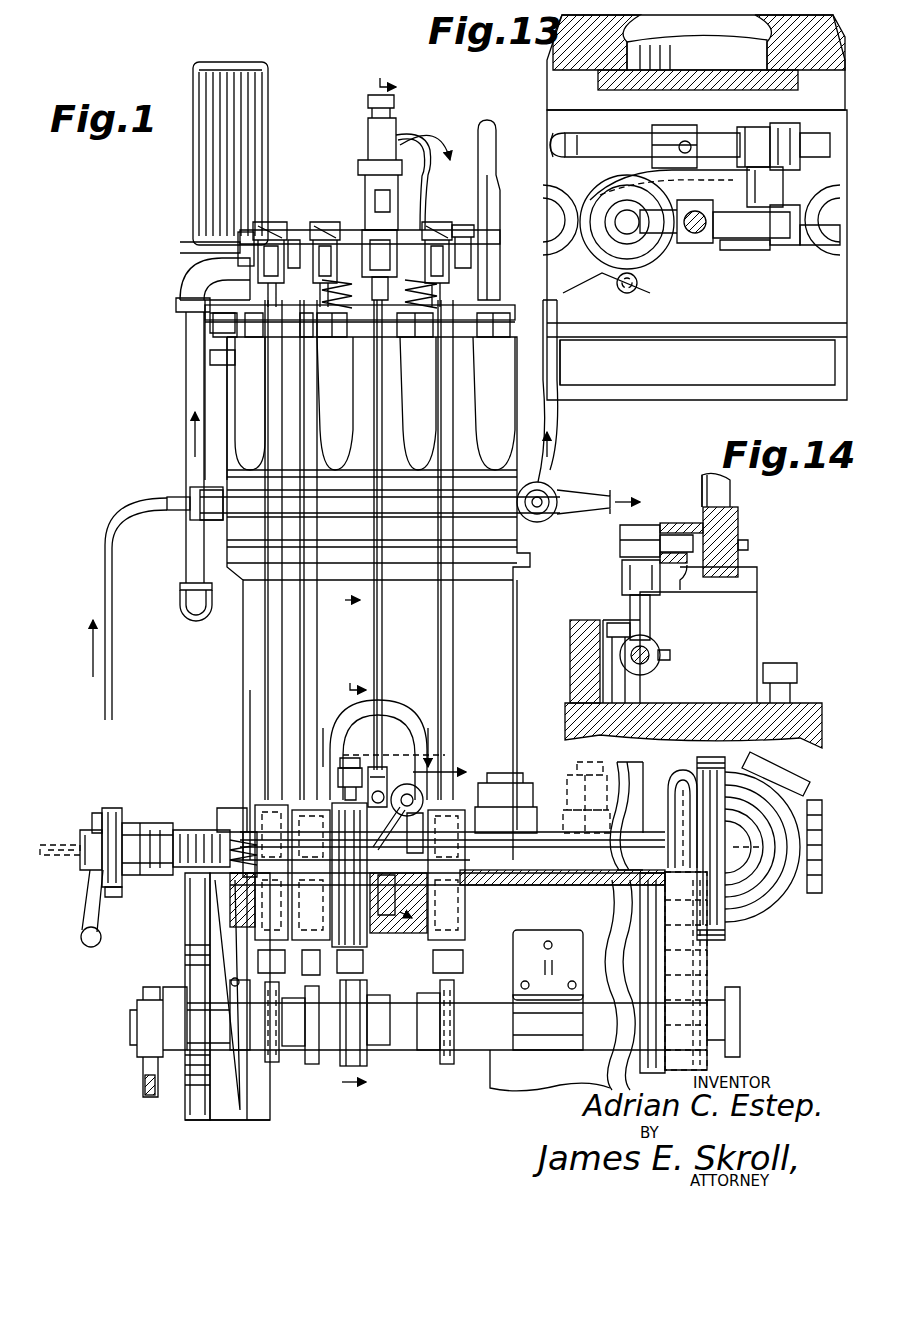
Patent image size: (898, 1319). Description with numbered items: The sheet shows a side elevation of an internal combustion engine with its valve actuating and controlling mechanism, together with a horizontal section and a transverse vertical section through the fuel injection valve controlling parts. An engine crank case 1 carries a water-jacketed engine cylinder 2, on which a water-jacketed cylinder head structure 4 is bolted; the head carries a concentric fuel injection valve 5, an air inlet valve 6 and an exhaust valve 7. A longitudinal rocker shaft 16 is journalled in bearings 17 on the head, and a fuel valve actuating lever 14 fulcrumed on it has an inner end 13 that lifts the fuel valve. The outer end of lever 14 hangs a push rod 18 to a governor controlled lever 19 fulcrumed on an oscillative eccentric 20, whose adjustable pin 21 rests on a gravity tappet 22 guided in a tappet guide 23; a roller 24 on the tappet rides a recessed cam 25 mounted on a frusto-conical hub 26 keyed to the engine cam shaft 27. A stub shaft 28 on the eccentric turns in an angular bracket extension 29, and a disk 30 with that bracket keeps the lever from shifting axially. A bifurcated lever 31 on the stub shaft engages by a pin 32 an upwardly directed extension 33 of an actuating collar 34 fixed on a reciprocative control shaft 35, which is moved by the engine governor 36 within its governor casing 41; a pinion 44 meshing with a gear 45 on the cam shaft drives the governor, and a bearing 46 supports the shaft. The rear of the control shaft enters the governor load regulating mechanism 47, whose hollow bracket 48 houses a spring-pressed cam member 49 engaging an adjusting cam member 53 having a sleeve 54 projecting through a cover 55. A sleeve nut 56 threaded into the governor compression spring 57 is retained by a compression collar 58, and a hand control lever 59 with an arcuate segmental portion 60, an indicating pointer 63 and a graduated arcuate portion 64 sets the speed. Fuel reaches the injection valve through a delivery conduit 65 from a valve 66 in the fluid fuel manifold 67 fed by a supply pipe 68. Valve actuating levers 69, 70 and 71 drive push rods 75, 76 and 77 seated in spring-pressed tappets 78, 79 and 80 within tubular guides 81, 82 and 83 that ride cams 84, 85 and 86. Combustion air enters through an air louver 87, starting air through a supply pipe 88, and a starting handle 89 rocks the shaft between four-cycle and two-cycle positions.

In FIG. 1, the engine crank case 1 is at (187, 1105).
In FIG. 13, the engine crank case 1 is at (705, 310).
In FIG. 14, the engine crank case 1 is at (795, 715).
In FIG. 1, the engine cylinder 2 is at (575, 772).
In FIG. 13, the engine cylinder 2 is at (608, 40).
In FIG. 14, the engine cylinder 2 is at (580, 662).
In FIG. 1, the cylinder head structure 4 is at (290, 445).
In FIG. 1, the fuel injection valve 5 is at (372, 145).
In FIG. 1, the air inlet valve 6 is at (372, 290).
In FIG. 1, the exhaust valve 7 is at (420, 280).
In FIG. 1, the inner end of fuel valve actuating lever 13 is at (381, 748).
In FIG. 1, the fuel valve actuating lever 14 is at (364, 235).
In FIG. 1, the rocker shaft 16 is at (236, 246).
In FIG. 1, the bearings 17 is at (294, 240).
In FIG. 1, the push rod 18 is at (383, 632).
In FIG. 13, the push rod 18 is at (688, 245).
In FIG. 1, the tappet actuated and governor controlled lever 19 is at (392, 767).
In FIG. 13, the tappet actuated and governor controlled lever 19 is at (722, 250).
In FIG. 14, the tappet actuated and governor controlled lever 19 is at (728, 515).
In FIG. 1, the oscillative eccentric 20 is at (423, 795).
In FIG. 13, the oscillative eccentric 20 is at (750, 245).
In FIG. 14, the oscillative eccentric 20 is at (738, 532).
In FIG. 1, the adjustable pin 21 is at (342, 762).
In FIG. 13, the adjustable pin 21 is at (624, 218).
In FIG. 1, the gravity tappet 22 is at (345, 795).
In FIG. 13, the gravity tappet 22 is at (638, 232).
In FIG. 1, the tappet guide 23 is at (360, 938).
In FIG. 13, the tappet guide 23 is at (608, 268).
In FIG. 1, the roller 24 is at (363, 962).
In FIG. 1, the cam 25 is at (350, 1068).
In FIG. 1, the frusto-conical hub 26 is at (385, 1048).
In FIG. 1, the engine cam shaft 27 is at (420, 1030).
In FIG. 13, the stub shaft 28 is at (698, 62).
In FIG. 14, the stub shaft 28 is at (676, 523).
In FIG. 1, the angular bracket extension 29 is at (397, 830).
In FIG. 13, the angular bracket extension 29 is at (710, 178).
In FIG. 14, the angular bracket extension 29 is at (688, 583).
In FIG. 1, the disk 30 is at (506, 803).
In FIG. 13, the disk 30 is at (772, 250).
In FIG. 14, the disk 30 is at (748, 558).
In FIG. 13, the bifurcated lever 31 is at (753, 147).
In FIG. 14, the bifurcated lever 31 is at (622, 537).
In FIG. 13, the pin 32 is at (790, 128).
In FIG. 14, the pin 32 is at (625, 590).
In FIG. 13, the upwardly directed extension 33 is at (795, 157).
In FIG. 14, the upwardly directed extension 33 is at (630, 608).
In FIG. 1, the actuating collar 34 is at (365, 900).
In FIG. 13, the actuating collar 34 is at (818, 134).
In FIG. 14, the actuating collar 34 is at (665, 648).
In FIG. 1, the control shaft 35 is at (505, 850).
In FIG. 13, the control shaft 35 is at (560, 138).
In FIG. 14, the control shaft 35 is at (640, 675).
In FIG. 1, the engine governor 36 is at (782, 925).
In FIG. 1, the governor casing 41 is at (758, 905).
In FIG. 1, the pinion 44 is at (668, 790).
In FIG. 1, the gear 45 is at (700, 975).
In FIG. 1, the bearing 46 is at (676, 812).
In FIG. 1, the governor load regulating mechanism 47 is at (152, 823).
In FIG. 1, the hollow bracket 48 is at (147, 876).
In FIG. 1, the spring-pressed cam member 49 is at (160, 826).
In FIG. 1, the adjusting cam member 53 is at (134, 823).
In FIG. 1, the sleeve 54 is at (84, 873).
In FIG. 1, the cover 55 is at (113, 897).
In FIG. 13, the sleeve nut 56 is at (592, 140).
In FIG. 1, the governor compression spring 57 is at (222, 810).
In FIG. 13, the compression collar 58 is at (680, 130).
In FIG. 1, the hand control lever 59 is at (80, 935).
In FIG. 1, the arcuate segmental portion 60 is at (97, 813).
In FIG. 1, the indicating pointer 63 is at (84, 838).
In FIG. 1, the graduated arcuate portion 64 is at (112, 808).
In FIG. 1, the delivery conduit 65 is at (548, 478).
In FIG. 1, the valve 66 is at (538, 522).
In FIG. 1, the fluid fuel manifold 67 is at (410, 500).
In FIG. 1, the supply pipe 68 is at (112, 655).
In FIG. 1, the valve actuating lever 69 is at (312, 240).
In FIG. 1, the valve actuating lever 70 is at (445, 222).
In FIG. 1, the valve actuating lever 71 is at (270, 222).
In FIG. 1, the push rod 75 is at (318, 633).
In FIG. 1, the push rod 76 is at (454, 630).
In FIG. 14, the push rod 76 is at (704, 478).
In FIG. 1, the push rod 77 is at (266, 648).
In FIG. 1, the spring-pressed tappet 78 is at (311, 875).
In FIG. 1, the spring-pressed tappet 79 is at (465, 910).
In FIG. 1, the spring-pressed tappet 80 is at (198, 945).
In FIG. 1, the tubular guide 81 is at (314, 947).
In FIG. 13, the tubular guide 81 is at (575, 300).
In FIG. 1, the tubular guide 82 is at (460, 935).
In FIG. 13, the tubular guide 82 is at (825, 272).
In FIG. 14, the tubular guide 82 is at (760, 640).
In FIG. 1, the tubular guide 83 is at (271, 889).
In FIG. 1, the cam 84 is at (312, 1065).
In FIG. 1, the cam 85 is at (447, 1066).
In FIG. 1, the cam 86 is at (273, 1062).
In FIG. 1, the air louver 87 is at (200, 190).
In FIG. 1, the supply pipe 88 is at (190, 370).
In FIG. 1, the starting handle 89 is at (483, 160).